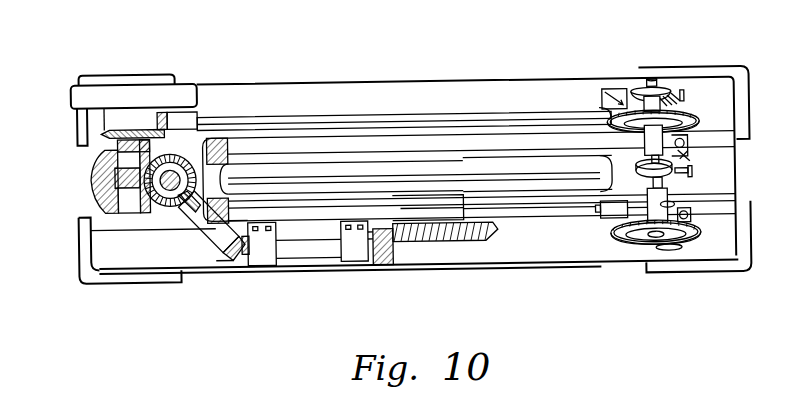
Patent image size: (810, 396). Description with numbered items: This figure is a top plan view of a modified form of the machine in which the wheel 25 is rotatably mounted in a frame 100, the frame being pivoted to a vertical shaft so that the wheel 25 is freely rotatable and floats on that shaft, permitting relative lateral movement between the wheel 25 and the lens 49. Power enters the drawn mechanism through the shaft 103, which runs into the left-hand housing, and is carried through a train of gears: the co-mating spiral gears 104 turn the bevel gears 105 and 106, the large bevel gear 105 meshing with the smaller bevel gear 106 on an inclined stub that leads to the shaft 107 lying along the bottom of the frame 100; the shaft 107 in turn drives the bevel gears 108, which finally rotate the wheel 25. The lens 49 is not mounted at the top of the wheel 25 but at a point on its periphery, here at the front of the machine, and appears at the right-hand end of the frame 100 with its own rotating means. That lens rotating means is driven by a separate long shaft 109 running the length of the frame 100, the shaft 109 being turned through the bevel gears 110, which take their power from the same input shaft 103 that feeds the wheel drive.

The wheel 25 is at (538, 193).
The lens 49 is at (692, 159).
The frame 100 is at (283, 150).
The shaft 103 is at (132, 153).
The spiral gears 104 is at (125, 190).
The bevel gear 105 is at (178, 204).
The bevel gear 106 is at (236, 263).
The shaft 107 is at (307, 257).
The bevel gears 108 is at (395, 246).
The shaft 109 is at (348, 122).
The bevel gears 110 is at (149, 131).